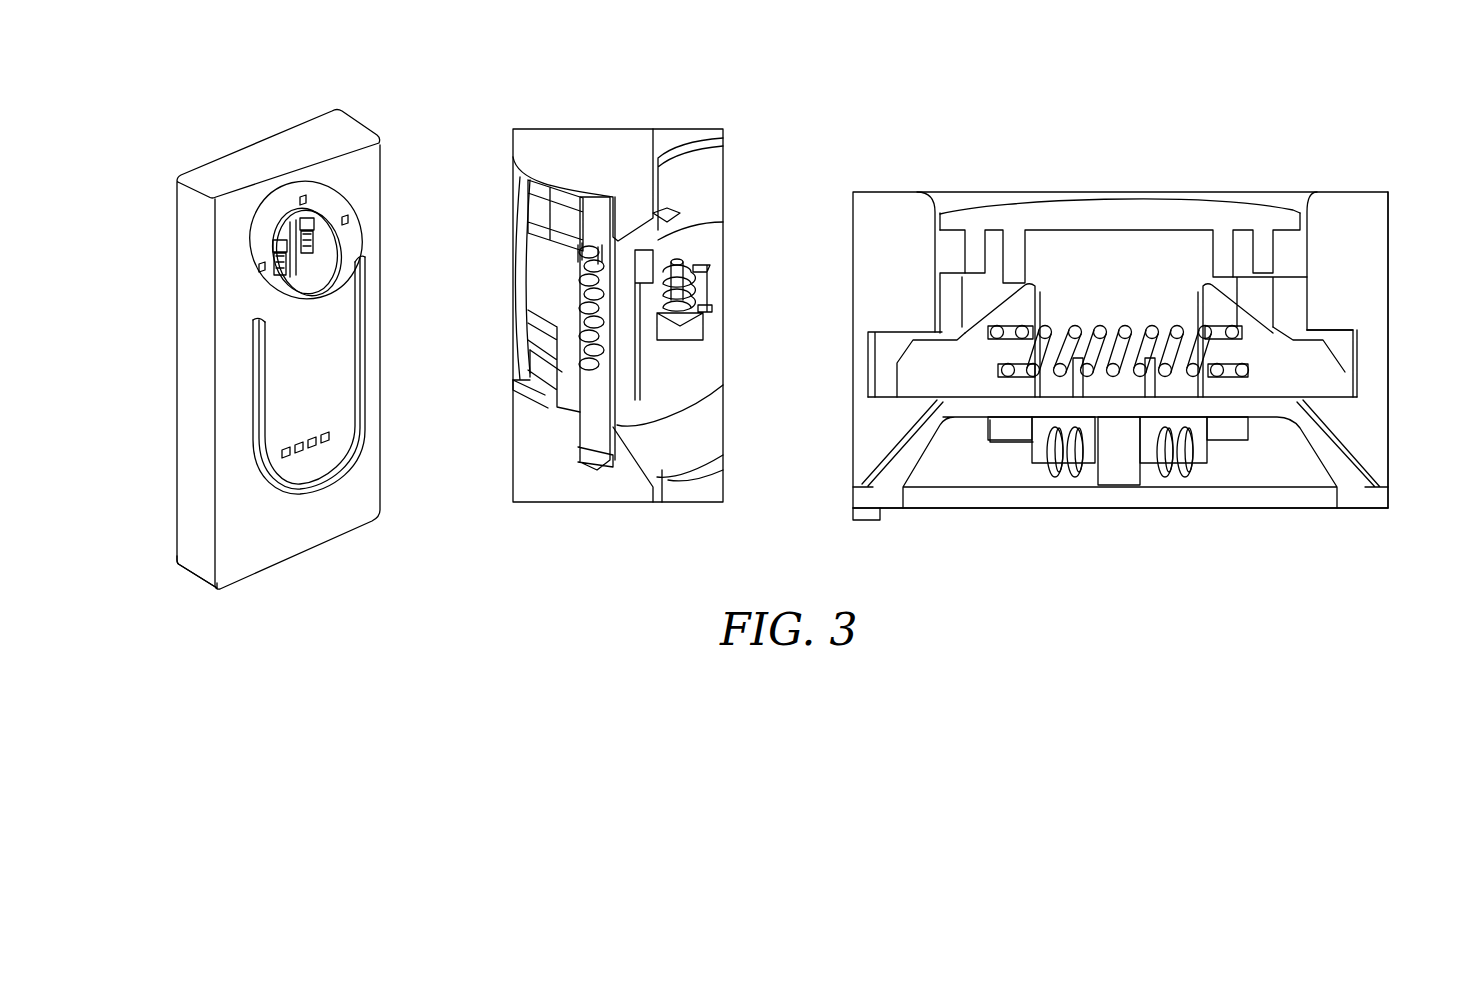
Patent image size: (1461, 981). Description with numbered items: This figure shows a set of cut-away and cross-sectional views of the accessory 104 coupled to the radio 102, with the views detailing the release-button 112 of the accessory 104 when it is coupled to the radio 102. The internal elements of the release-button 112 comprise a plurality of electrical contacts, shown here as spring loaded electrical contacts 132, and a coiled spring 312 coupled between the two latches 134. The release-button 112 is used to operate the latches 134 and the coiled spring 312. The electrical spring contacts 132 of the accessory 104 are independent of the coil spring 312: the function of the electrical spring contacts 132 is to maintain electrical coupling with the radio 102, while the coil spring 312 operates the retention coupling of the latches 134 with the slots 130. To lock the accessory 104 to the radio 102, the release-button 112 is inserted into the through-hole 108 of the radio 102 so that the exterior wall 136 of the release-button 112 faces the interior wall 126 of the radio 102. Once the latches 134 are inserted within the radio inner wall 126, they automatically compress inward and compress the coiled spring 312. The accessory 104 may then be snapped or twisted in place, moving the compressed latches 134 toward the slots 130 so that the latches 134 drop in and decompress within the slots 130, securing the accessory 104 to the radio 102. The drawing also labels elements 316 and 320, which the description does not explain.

The radio 102 is at (160, 503).
The accessory 104 is at (318, 334).
The through-hole 108 is at (195, 570).
The release-button 112 is at (520, 280).
The interior wall 126 is at (1350, 250).
The slots 130 is at (583, 195).
The spring loaded electrical contacts 132 is at (308, 224).
The latches 134 is at (597, 207).
The exterior wall 136 is at (323, 408).
The coiled spring 312 is at (558, 375).
The spring housing 316 is at (1042, 453).
The base 320 is at (1352, 490).